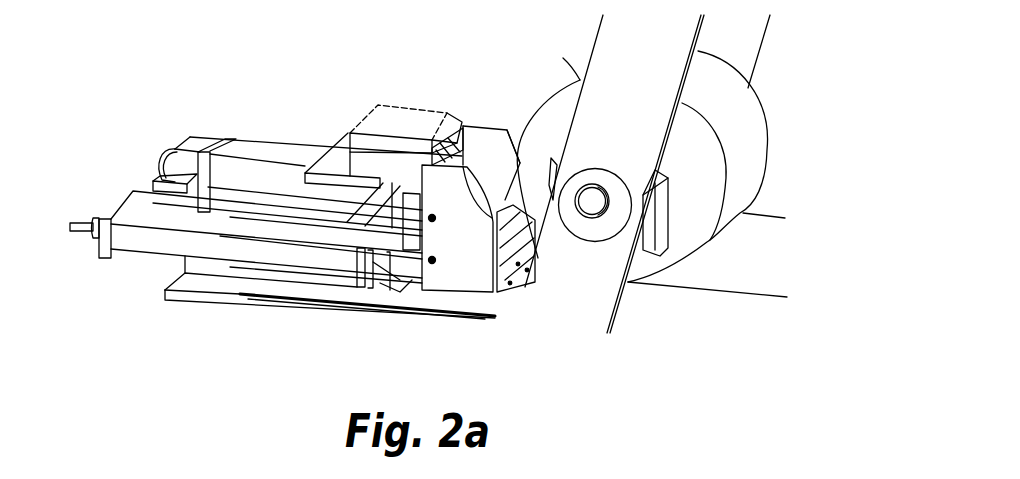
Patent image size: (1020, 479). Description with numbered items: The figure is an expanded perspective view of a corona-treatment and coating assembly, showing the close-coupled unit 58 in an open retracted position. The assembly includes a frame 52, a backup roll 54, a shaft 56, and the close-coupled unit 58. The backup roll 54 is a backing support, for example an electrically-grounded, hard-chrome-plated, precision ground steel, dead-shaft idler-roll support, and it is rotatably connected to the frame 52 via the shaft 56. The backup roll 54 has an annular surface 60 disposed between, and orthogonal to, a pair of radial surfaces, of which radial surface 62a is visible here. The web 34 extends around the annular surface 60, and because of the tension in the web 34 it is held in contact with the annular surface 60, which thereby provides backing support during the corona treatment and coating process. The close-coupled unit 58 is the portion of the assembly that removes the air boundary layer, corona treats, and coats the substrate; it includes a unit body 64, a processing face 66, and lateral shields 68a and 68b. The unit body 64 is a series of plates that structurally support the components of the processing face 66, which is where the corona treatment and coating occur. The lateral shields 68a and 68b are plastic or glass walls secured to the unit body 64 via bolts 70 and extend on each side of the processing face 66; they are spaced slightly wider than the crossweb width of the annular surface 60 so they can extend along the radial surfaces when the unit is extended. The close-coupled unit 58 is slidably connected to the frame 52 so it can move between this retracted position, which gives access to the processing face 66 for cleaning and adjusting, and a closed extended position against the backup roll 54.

The close-coupled unit 58 is at (303, 80).
The unit body 64 is at (170, 242).
The frame 52 is at (212, 338).
The lateral shield 68b is at (483, 128).
The processing face 66 is at (497, 195).
The bolts 70 is at (432, 218).
The lateral shield 68a is at (482, 260).
The web 34 is at (582, 83).
The shaft 56 is at (590, 212).
The annular surface 60 is at (755, 160).
The radial surface 62a is at (662, 263).
The backup roll 54 is at (724, 242).